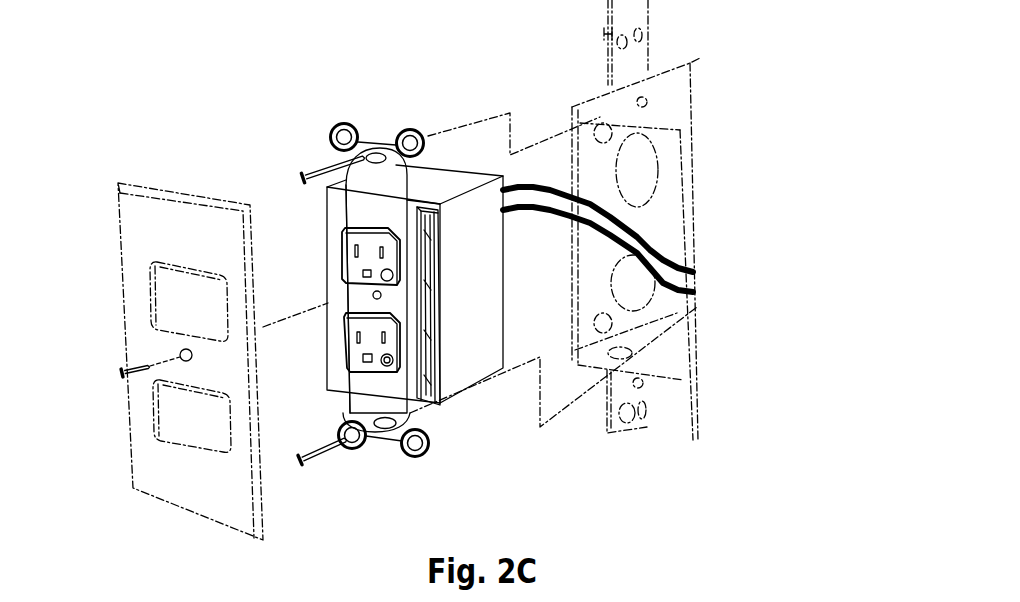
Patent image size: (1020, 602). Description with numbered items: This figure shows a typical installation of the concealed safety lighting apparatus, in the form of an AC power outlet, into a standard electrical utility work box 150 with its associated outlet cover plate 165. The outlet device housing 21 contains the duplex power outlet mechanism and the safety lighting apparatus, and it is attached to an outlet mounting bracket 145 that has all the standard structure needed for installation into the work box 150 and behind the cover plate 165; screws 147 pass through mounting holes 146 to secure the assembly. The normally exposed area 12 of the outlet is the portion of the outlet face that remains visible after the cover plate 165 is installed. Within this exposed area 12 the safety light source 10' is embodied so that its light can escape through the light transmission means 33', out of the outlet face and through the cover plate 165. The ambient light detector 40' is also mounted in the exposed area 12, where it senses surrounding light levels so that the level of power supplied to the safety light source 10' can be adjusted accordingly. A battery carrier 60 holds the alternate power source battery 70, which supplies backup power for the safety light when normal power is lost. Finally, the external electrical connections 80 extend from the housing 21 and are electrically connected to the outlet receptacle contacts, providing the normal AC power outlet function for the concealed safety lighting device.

The outlet cover plate 165 is at (157, 235).
The screw 147 is at (323, 168).
The mounting holes 146 is at (377, 154).
The normally exposed area of the outlet 12 is at (348, 237).
The ambient light detector 40' is at (337, 265).
The light transmission means for safety light 33' is at (339, 364).
The safety light source 10' is at (348, 290).
The outlet mounting bracket 145 is at (373, 388).
The battery carrier 60 is at (437, 405).
The alternate power source battery 70 is at (441, 353).
The outlet device housing 21 is at (467, 368).
The external electrical connections 80 is at (557, 198).
The electrical utility work box 150 is at (670, 72).